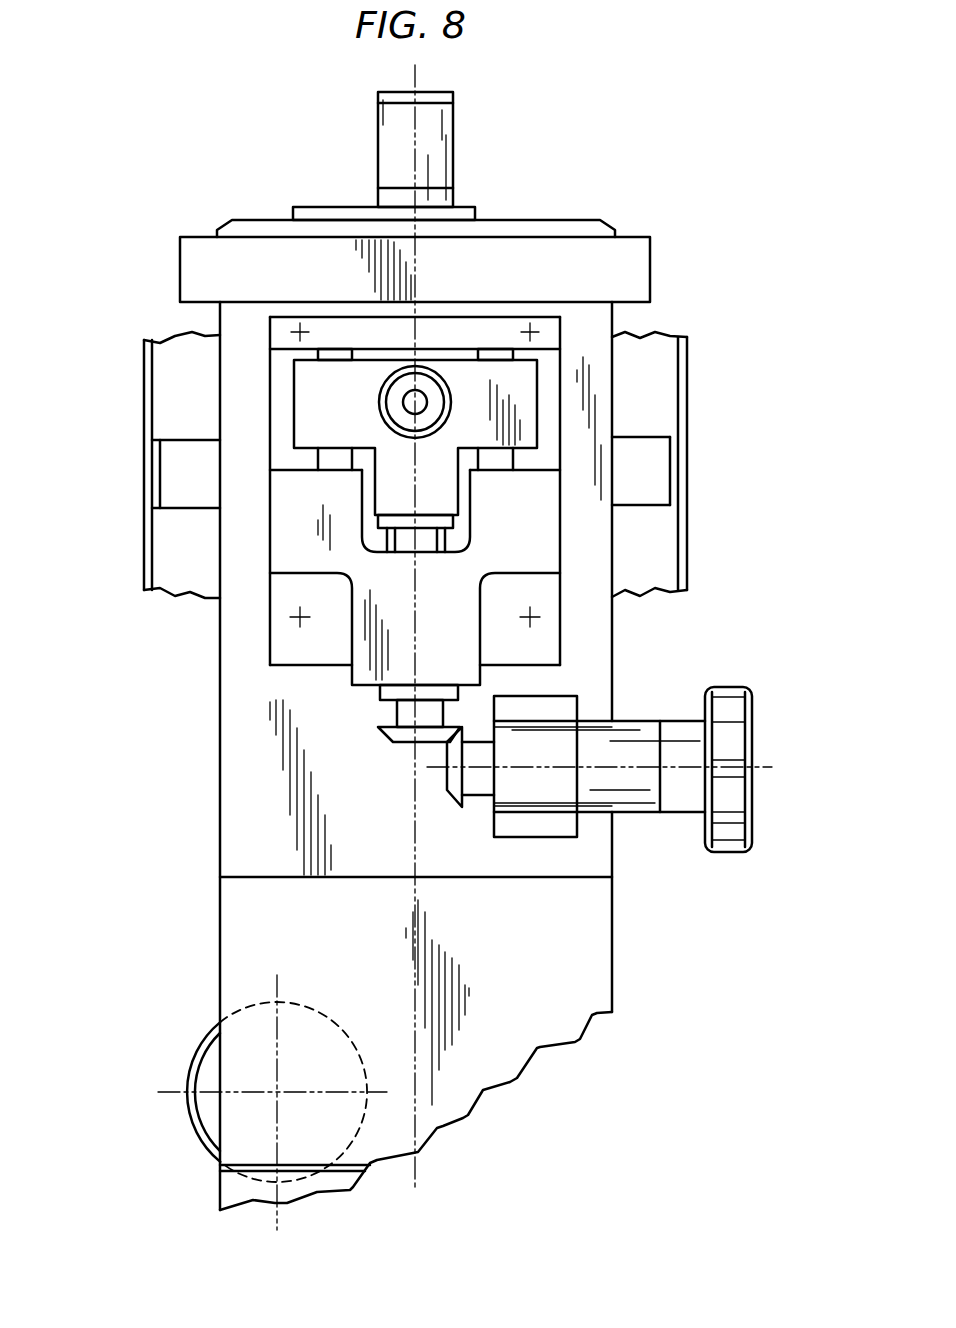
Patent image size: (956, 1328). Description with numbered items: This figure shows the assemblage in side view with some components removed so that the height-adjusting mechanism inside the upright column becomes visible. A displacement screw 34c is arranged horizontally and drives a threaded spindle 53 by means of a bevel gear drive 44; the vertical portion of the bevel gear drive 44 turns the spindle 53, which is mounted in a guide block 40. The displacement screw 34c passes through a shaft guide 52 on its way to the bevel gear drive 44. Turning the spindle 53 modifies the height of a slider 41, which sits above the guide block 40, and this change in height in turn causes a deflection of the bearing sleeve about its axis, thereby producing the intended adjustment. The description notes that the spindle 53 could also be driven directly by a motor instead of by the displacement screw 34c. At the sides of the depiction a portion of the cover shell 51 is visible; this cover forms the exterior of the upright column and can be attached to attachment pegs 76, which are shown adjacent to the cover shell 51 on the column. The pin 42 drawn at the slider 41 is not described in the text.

The displacement screw 34c is at (730, 793).
The guide block 40 is at (540, 533).
The slider 41 is at (520, 428).
The pivot pin 42 is at (433, 392).
The bevel gear drive 44 is at (407, 744).
The cover shell 51 is at (175, 378).
The shaft guide 52 is at (640, 793).
The threaded spindle 53 is at (417, 542).
The attachment peg 76 is at (175, 488).